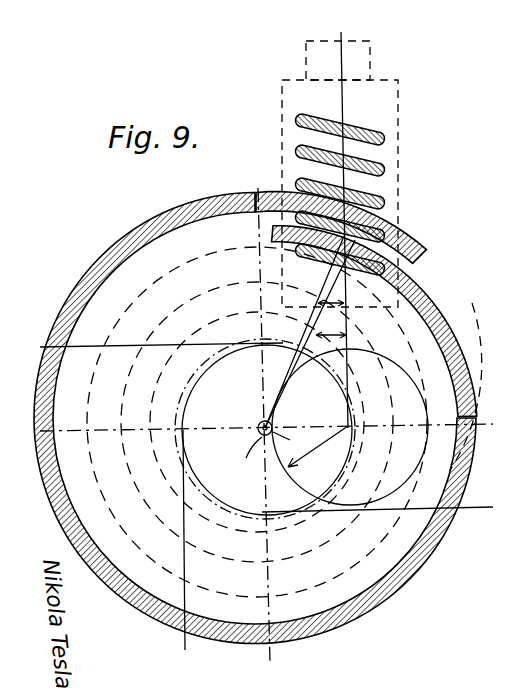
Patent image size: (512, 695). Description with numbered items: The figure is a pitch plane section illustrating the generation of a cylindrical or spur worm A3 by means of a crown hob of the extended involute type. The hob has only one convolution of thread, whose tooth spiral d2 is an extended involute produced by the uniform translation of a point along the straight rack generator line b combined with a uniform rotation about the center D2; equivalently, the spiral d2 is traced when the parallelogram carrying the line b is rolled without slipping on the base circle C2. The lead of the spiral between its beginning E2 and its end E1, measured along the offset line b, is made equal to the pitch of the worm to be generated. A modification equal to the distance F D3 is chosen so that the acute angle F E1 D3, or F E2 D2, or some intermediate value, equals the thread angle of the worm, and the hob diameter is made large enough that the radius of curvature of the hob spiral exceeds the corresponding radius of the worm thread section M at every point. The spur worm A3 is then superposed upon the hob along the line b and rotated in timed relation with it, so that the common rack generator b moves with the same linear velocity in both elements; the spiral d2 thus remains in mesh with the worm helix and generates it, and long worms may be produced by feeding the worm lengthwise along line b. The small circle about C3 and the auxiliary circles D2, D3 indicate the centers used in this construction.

The rack generator line b is at (347, 226).
The spur worm A3 is at (400, 113).
The plane section of worm thread M is at (372, 197).
The end point of hob spiral convolution E1 is at (392, 222).
The beginning point of hob spiral convolution E2 is at (400, 268).
The extended involute spiral d2 is at (184, 260).
The base circle C2 is at (258, 426).
The angle lines C3 is at (310, 355).
The modification point F is at (286, 442).
The point a is at (246, 475).
The center of hob spiral D2 is at (267, 433).
The center defining modification D3 is at (348, 426).